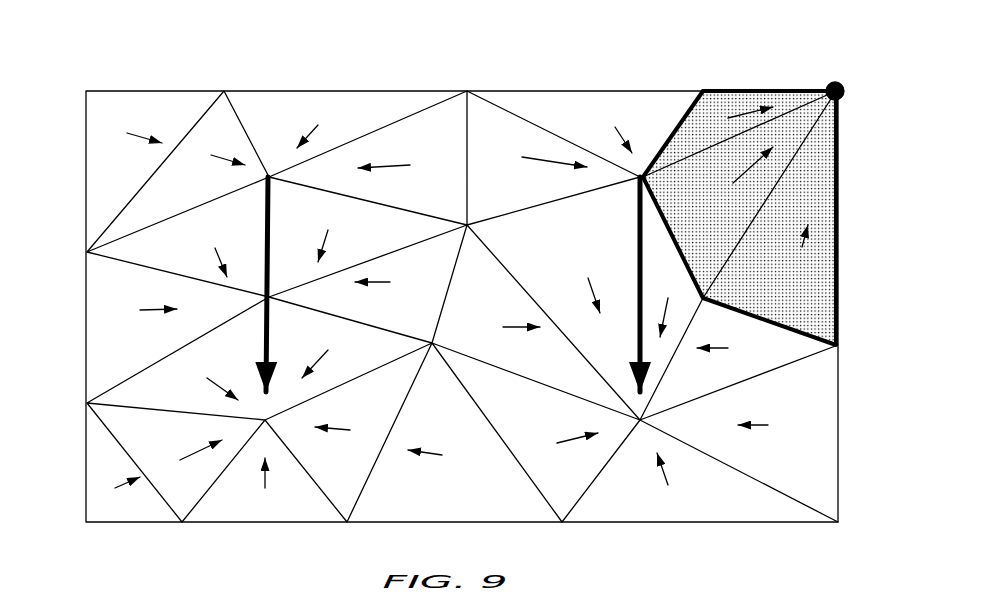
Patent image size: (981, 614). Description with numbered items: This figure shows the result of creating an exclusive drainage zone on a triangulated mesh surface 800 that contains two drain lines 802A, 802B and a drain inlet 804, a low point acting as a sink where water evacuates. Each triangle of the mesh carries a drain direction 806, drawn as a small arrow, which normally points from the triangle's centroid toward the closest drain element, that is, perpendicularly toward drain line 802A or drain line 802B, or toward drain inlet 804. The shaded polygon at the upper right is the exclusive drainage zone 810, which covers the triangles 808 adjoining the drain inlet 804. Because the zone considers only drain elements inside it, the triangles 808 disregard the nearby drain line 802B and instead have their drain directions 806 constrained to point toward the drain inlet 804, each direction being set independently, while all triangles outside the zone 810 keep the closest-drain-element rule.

The mesh surface 800 is at (86, 168).
The drain line 802A is at (273, 220).
The drain line 802B is at (638, 230).
The drain inlet 804 is at (845, 93).
The drain directions 806 is at (328, 230).
The triangles 808 is at (718, 123).
The exclusive drainage zone 810 is at (797, 89).